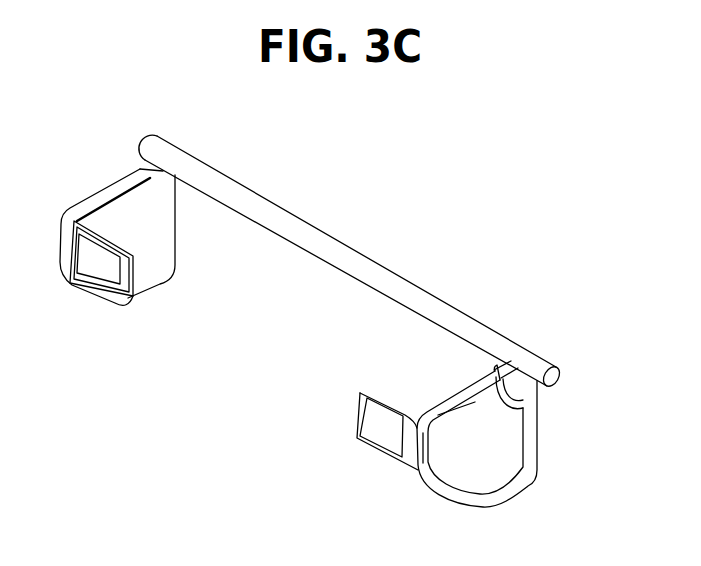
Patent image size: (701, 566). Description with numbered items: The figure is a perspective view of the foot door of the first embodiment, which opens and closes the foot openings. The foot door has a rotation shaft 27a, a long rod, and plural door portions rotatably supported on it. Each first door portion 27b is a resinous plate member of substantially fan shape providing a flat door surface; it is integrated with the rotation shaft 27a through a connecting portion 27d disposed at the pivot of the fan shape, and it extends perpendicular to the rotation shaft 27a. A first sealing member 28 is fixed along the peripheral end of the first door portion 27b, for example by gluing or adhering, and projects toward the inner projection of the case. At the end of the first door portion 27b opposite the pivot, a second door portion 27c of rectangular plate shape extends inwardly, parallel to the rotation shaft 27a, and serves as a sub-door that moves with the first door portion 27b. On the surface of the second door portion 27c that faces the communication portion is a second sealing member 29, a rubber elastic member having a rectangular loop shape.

The rotation shaft 27a is at (398, 281).
The first door portion 27b is at (145, 255).
The second door portion 27c is at (122, 289).
The connecting portion 27d is at (520, 390).
The first sealing member 28 is at (107, 192).
The second sealing member 29 is at (90, 275).